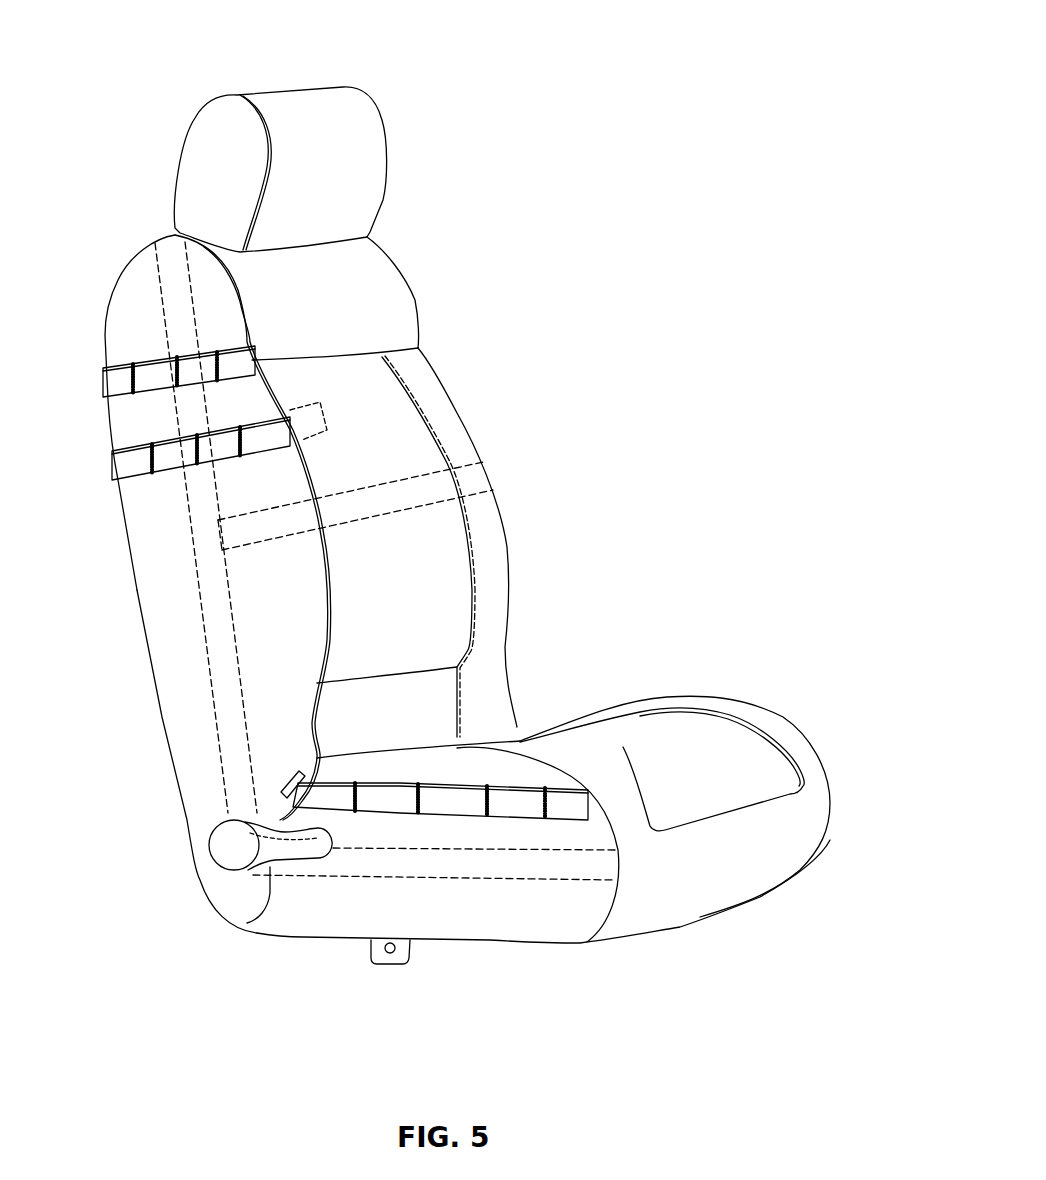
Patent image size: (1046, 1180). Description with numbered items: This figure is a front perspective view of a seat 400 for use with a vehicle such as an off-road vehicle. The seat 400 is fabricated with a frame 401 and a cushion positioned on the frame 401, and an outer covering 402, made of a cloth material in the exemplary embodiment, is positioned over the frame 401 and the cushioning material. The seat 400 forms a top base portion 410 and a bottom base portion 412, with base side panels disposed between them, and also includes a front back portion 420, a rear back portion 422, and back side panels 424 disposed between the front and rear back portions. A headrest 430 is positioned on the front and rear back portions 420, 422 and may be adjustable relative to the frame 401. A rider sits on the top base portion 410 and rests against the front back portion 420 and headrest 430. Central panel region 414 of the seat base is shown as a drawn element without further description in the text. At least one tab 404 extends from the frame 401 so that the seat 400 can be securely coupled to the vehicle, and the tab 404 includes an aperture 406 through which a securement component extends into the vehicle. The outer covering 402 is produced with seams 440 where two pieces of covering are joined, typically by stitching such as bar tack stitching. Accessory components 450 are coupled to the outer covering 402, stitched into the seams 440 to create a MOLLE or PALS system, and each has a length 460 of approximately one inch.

The seat 400 is at (131, 45).
The frame 401 is at (172, 293).
The outer covering 402 is at (487, 515).
The tab 404 is at (403, 953).
The aperture 406 is at (388, 955).
The top base portion 410 is at (808, 726).
The bottom base portion 412 is at (684, 930).
The seat cushion center panel 414 is at (563, 897).
The front back portion 420 is at (440, 596).
The rear back portion 422 is at (105, 411).
The back side panels 424 is at (137, 508).
The headrest 430 is at (370, 163).
The seams 440 is at (247, 317).
The accessory components 450 is at (99, 377).
The length 460 is at (323, 417).